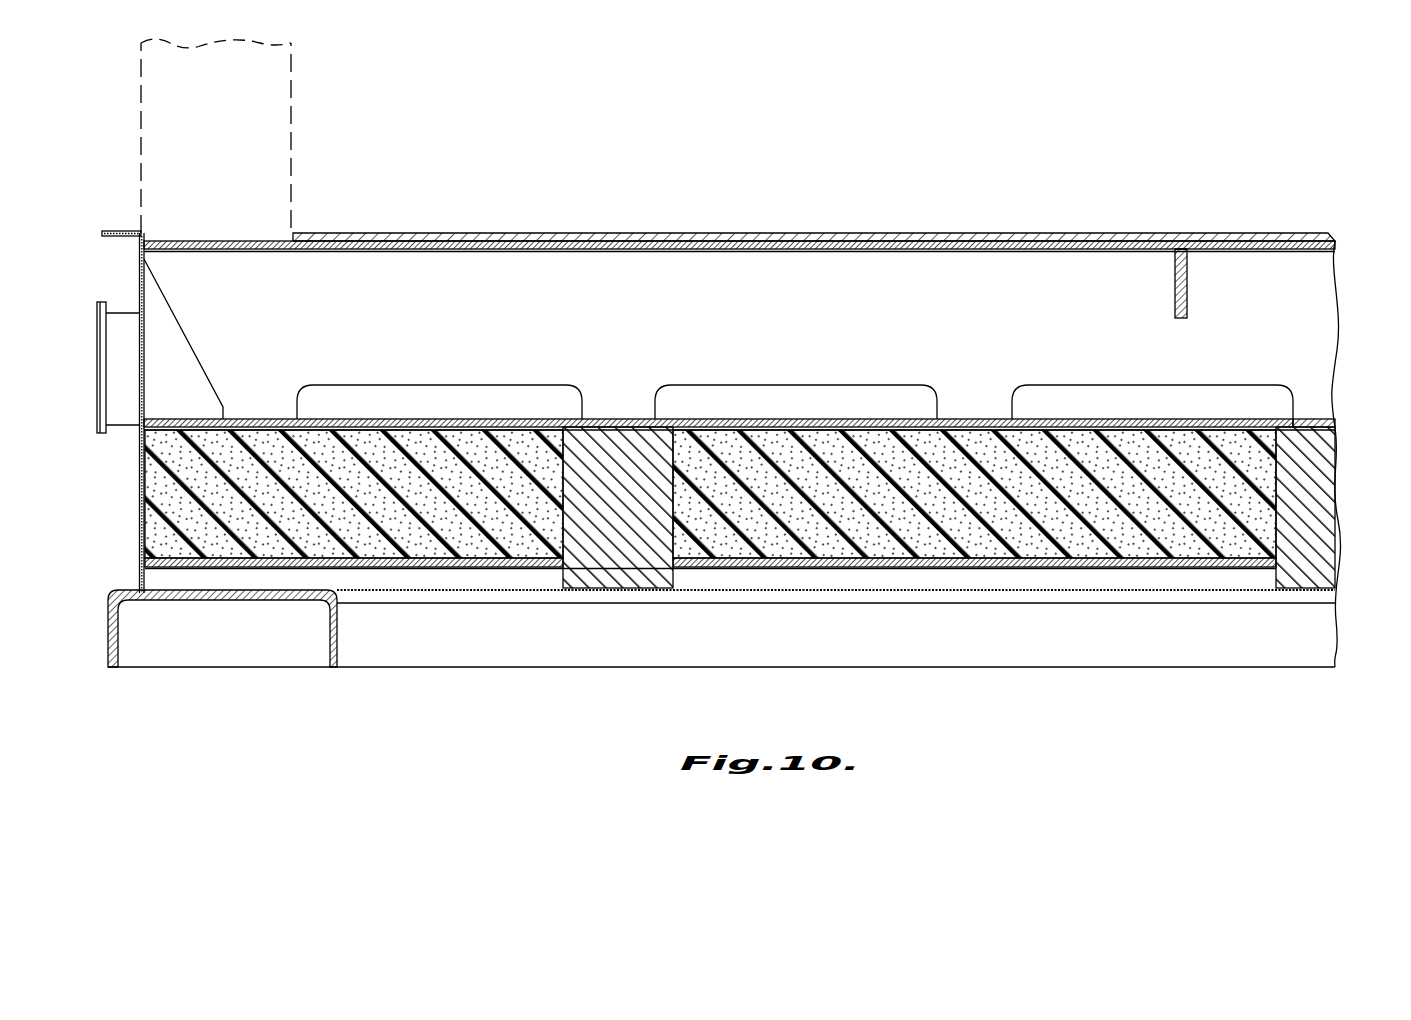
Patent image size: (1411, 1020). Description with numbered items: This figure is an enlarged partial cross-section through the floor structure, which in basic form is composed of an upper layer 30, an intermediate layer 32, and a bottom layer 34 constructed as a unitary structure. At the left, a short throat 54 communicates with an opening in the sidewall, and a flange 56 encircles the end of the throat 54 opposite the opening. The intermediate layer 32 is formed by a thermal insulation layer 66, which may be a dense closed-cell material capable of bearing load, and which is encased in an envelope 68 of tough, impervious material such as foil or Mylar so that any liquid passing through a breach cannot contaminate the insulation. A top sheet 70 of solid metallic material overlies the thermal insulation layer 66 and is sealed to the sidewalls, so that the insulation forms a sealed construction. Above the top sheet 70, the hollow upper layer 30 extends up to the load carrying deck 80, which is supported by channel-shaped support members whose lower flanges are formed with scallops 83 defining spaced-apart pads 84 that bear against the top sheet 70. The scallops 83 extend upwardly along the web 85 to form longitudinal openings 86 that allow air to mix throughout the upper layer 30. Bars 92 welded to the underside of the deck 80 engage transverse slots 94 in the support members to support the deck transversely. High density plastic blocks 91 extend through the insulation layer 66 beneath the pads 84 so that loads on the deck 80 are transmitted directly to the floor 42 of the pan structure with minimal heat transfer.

The upper layer 30 is at (1340, 347).
The intermediate layer 32 is at (772, 567).
The bottom layer 34 is at (1355, 583).
The floor 42 is at (460, 590).
The throat 54 is at (127, 313).
The flange 56 is at (101, 303).
The thermal insulation layer 66 is at (1118, 548).
The envelope 68 is at (862, 560).
The top sheet 70 is at (165, 421).
The load carrying deck 80 is at (1005, 233).
The scallops 83 is at (795, 299).
The pads 84 is at (600, 419).
The web 85 is at (752, 338).
The longitudinal openings 86 is at (488, 397).
The blocks 91 is at (640, 588).
The bars 92 is at (1181, 249).
The transverse slots 94 is at (1175, 268).